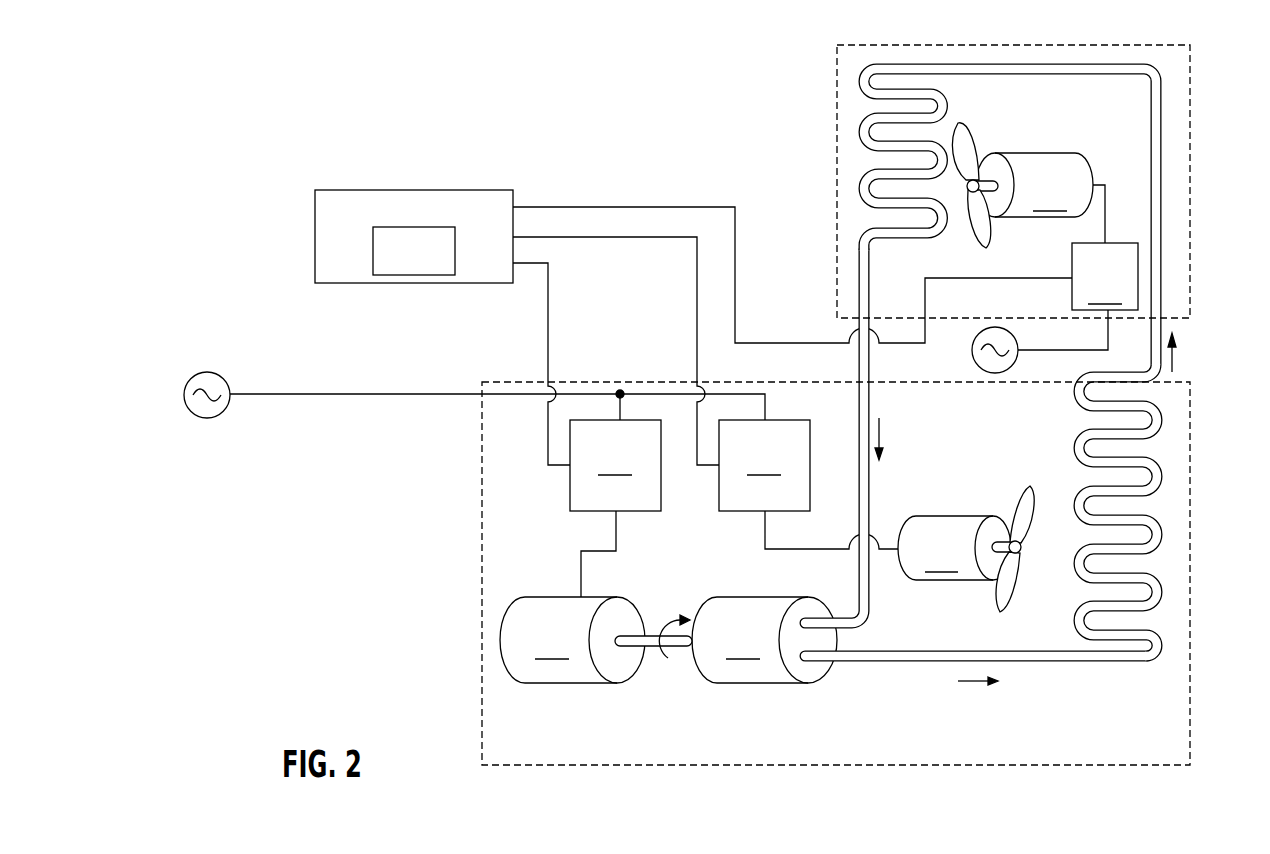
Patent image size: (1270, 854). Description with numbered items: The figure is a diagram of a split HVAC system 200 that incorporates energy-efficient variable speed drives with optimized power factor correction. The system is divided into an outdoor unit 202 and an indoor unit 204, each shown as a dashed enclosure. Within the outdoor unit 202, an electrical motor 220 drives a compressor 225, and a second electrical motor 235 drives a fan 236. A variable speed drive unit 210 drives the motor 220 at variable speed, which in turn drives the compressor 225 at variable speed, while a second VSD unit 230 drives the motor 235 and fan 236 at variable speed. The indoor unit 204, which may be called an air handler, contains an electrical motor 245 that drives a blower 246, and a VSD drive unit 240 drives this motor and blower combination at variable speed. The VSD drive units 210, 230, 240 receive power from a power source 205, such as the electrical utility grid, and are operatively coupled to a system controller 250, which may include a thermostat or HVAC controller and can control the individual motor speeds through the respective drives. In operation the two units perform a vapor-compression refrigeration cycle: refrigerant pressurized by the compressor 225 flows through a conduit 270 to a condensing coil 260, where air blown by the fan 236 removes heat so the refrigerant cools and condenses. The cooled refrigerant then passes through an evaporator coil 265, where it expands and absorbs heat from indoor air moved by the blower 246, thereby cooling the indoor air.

The HVAC system 200 is at (400, 90).
The outdoor unit 202 is at (1191, 738).
The indoor unit 204 is at (1191, 82).
The power source 205 is at (208, 372).
The variable speed drive unit 210 is at (615, 508).
The electrical motor 220 is at (572, 640).
The compressor 225 is at (764, 640).
The second VSD unit 230 is at (808, 484).
The electrical motor 235 is at (954, 548).
The fan 236 is at (1027, 484).
The VSD drive unit 240 is at (1105, 247).
The electrical motor 245 is at (1034, 185).
The blower 246 is at (964, 124).
The system controller 250 is at (370, 189).
The condensing coil 260 is at (1073, 619).
The evaporator coil 265 is at (857, 133).
The conduit 270 is at (925, 663).